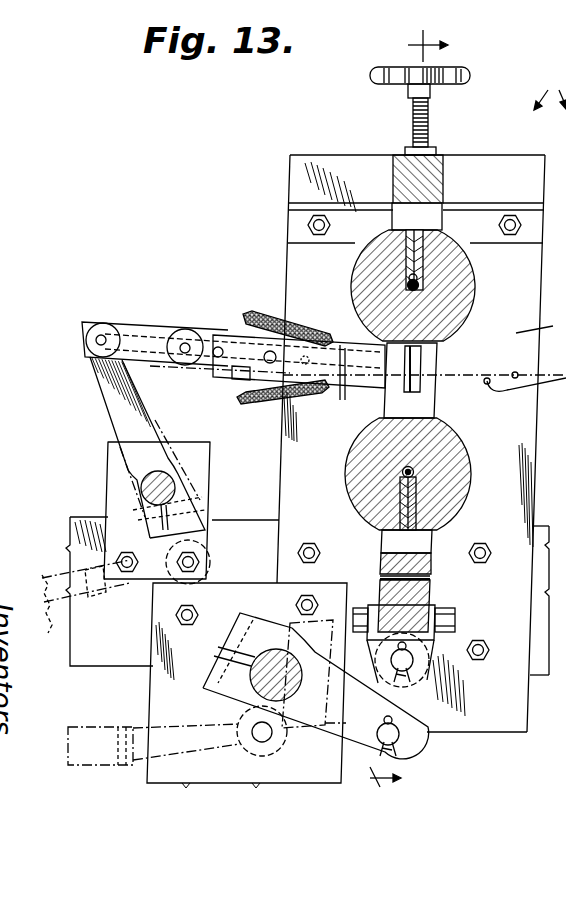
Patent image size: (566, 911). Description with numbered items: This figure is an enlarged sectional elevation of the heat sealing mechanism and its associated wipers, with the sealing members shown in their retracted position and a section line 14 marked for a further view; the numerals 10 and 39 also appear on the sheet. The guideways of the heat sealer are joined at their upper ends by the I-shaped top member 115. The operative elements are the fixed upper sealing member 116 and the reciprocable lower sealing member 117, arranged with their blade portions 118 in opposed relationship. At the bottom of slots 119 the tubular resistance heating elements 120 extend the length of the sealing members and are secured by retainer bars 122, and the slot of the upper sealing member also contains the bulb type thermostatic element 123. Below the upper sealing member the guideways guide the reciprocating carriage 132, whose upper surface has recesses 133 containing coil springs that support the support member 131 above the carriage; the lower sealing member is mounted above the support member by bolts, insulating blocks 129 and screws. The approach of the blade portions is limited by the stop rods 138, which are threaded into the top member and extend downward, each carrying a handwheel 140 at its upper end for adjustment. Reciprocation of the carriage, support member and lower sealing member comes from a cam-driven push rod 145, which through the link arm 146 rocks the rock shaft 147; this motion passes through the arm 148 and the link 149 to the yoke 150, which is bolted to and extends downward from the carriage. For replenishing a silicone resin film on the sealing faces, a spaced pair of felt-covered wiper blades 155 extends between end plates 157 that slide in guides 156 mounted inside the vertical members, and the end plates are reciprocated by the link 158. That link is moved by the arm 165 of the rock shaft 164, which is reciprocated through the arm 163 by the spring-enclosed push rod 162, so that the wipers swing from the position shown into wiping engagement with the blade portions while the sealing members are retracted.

The frame 10 is at (92, 660).
The section line 14 is at (422, 409).
The feed direction 39 is at (550, 89).
The top member 115 is at (298, 153).
The upper sealing member 116 is at (463, 315).
The lower sealing member 117 is at (458, 462).
The blade portions 118 is at (414, 352).
The slots 119 is at (406, 251).
The tubular resistance heating elements 120 is at (420, 286).
The retainer bars 122 is at (423, 262).
The bulb type thermostatic element 123 is at (409, 281).
The insulating blocks 129 is at (438, 220).
The support member 131 is at (423, 565).
The carriage 132 is at (418, 598).
The recesses 133 is at (430, 576).
The stop rods 138 is at (430, 122).
The handwheel 140 is at (470, 77).
The push rod 145 is at (172, 743).
The link arm 146 is at (274, 751).
The rock shaft 147 is at (245, 698).
The arm 148 is at (342, 740).
The link 149 is at (410, 700).
The yoke 150 is at (437, 640).
The wiper blades 155 is at (315, 333).
The guides 156 is at (363, 382).
The end plates 157 is at (240, 372).
The link 158 is at (172, 296).
The push rod 162 is at (69, 637).
The arm 163 is at (200, 538).
The rock shaft 164 is at (141, 490).
The arm 165 is at (118, 420).